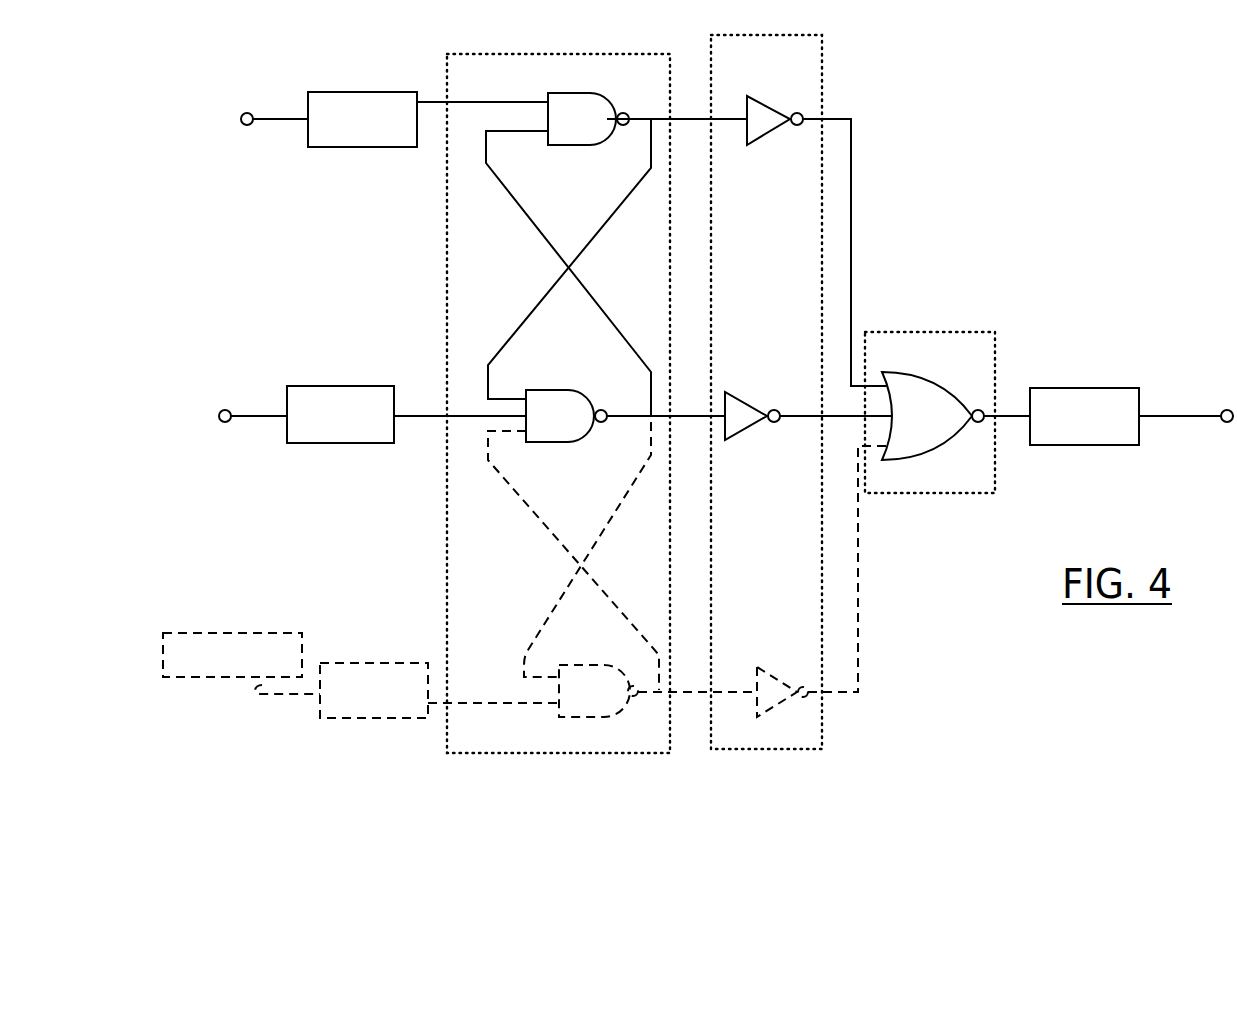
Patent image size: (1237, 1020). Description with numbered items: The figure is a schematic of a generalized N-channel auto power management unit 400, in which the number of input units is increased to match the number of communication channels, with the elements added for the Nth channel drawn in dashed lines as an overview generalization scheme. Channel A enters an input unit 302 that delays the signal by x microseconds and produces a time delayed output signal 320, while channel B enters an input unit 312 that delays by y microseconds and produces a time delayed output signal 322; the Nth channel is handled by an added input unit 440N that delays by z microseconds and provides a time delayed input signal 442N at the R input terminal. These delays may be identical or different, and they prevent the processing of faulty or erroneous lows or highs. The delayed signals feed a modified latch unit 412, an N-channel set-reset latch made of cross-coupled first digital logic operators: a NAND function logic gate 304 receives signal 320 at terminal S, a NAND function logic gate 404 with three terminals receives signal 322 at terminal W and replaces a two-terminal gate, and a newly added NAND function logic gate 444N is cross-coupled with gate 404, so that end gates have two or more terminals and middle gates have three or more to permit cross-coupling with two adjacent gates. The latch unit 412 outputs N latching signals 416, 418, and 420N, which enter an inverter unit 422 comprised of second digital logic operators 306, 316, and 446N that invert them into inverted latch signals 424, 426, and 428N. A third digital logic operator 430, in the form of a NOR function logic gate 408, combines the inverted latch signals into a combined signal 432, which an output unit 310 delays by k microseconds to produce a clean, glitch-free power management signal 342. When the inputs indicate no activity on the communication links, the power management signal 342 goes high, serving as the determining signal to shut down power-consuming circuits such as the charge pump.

The power management unit 400 is at (941, 621).
The input unit 302 is at (326, 148).
The input unit 312 is at (316, 386).
The input unit 440N is at (362, 663).
The output unit 310 is at (1078, 388).
The time delayed output signal 320 is at (437, 102).
The time delayed output signal 322 is at (423, 417).
The time delayed input signal 442N is at (436, 704).
The NAND function logic gate 304 is at (568, 254).
The NAND function logic gate 404 is at (573, 540).
The NAND function logic gate 444N is at (598, 691).
The latch unit 412 is at (535, 756).
The latching signal 416 is at (693, 120).
The latching signal 418 is at (690, 417).
The latching signal 420N is at (693, 693).
The inverter unit 422 is at (800, 750).
The second digital logic operator 306 is at (760, 98).
The second digital logic operator 316 is at (733, 397).
The second digital logic operator 446N is at (767, 668).
The inverted latch signal 424 is at (852, 223).
The inverted latch signal 426 is at (838, 417).
The inverted latch signal 428N is at (858, 578).
The third digital logic operator 430 is at (915, 332).
The NOR function logic gate 408 is at (933, 416).
The combined signal 432 is at (1013, 416).
The power management signal 342 is at (1183, 417).